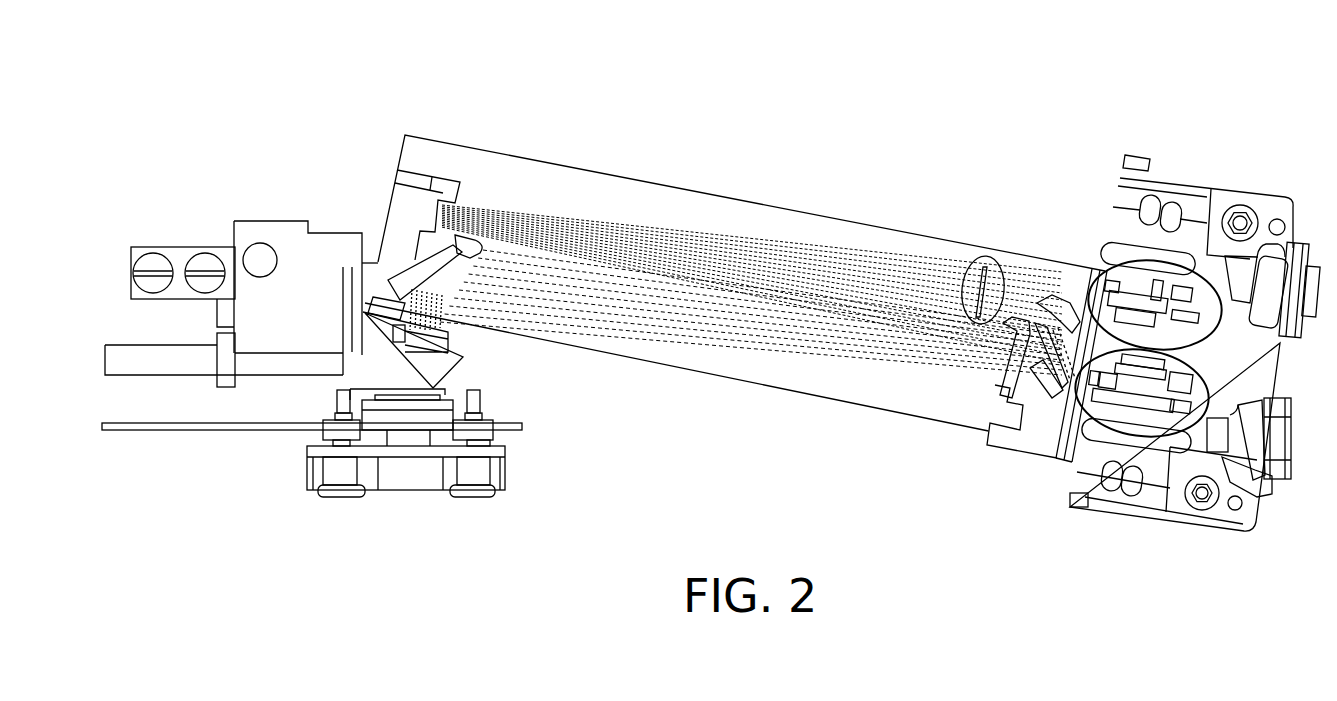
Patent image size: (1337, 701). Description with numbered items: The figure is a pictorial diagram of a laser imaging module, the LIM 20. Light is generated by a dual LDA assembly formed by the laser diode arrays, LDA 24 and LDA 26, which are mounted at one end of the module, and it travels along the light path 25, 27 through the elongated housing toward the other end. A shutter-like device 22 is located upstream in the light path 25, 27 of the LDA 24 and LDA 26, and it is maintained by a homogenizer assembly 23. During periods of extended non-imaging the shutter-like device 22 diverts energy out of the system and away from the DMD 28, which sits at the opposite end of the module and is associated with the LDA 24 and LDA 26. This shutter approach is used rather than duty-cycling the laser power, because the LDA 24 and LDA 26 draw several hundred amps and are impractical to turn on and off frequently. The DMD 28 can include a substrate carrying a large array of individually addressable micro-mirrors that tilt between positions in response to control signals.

The LIM 20 is at (350, 95).
The shutter-like device 22 is at (965, 262).
The homogenizer assembly 23 is at (928, 418).
The LDA 24 is at (1093, 425).
The light path 25 is at (812, 252).
The LDA 26 is at (1200, 346).
The light path 27 is at (860, 287).
The DMD 28 is at (417, 408).